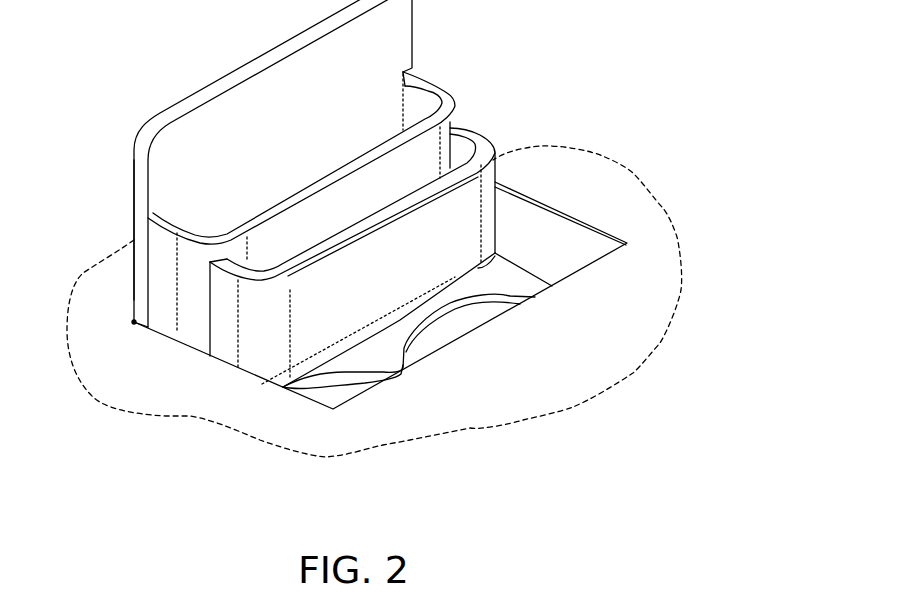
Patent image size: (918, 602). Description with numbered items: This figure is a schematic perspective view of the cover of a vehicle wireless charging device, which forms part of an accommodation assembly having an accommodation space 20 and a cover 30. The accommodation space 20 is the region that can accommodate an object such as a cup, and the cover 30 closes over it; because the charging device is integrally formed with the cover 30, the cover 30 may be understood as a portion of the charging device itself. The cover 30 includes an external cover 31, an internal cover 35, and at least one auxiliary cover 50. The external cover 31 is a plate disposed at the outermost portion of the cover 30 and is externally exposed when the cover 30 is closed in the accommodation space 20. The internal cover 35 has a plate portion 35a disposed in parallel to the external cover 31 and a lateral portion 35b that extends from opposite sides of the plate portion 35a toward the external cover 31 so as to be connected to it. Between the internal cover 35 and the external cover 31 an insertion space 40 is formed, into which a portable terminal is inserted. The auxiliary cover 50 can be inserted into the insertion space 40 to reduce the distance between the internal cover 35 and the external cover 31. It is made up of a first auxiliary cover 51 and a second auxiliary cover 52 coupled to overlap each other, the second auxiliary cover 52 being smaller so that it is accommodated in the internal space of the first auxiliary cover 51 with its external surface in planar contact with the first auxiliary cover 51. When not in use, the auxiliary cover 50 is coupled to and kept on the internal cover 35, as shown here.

The accommodation space 20 is at (505, 315).
The cover 30 is at (290, 258).
The external cover 31 is at (133, 190).
The internal cover 35 is at (196, 375).
The plate portion 35a is at (282, 235).
The lateral portion 35b is at (160, 283).
The insertion space 40 is at (303, 157).
The auxiliary cover 50 is at (476, 229).
The first auxiliary cover 51 is at (463, 220).
The second auxiliary cover 52 is at (478, 133).